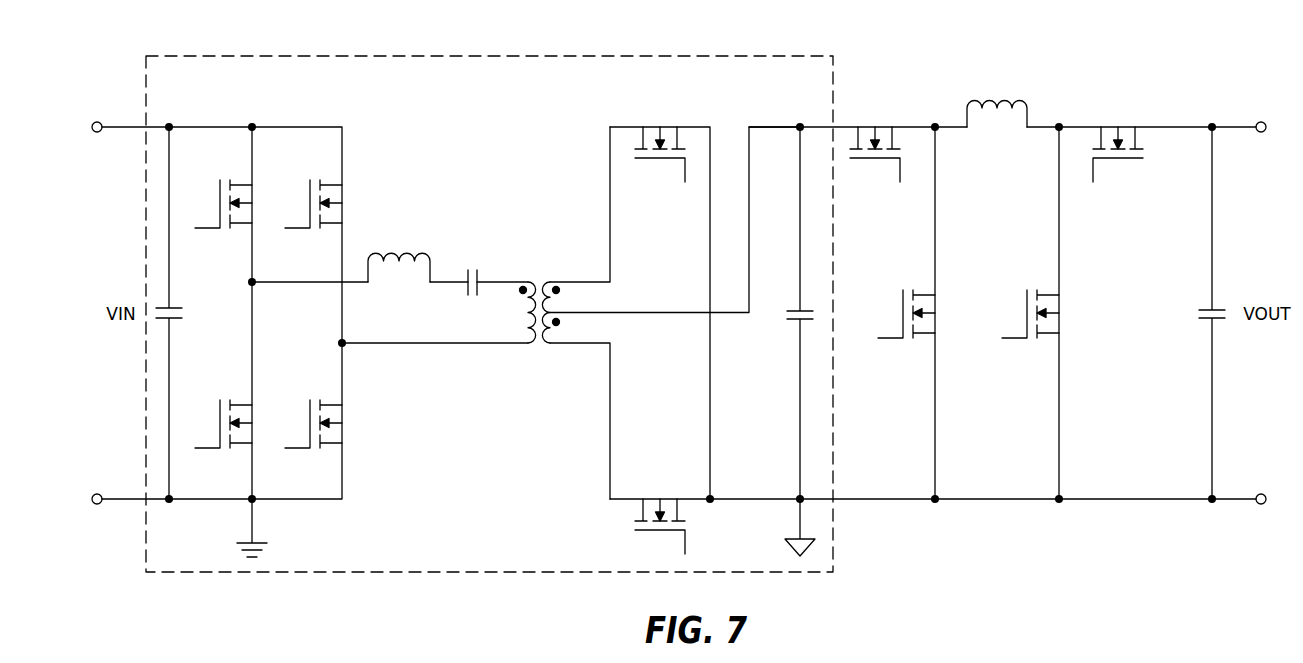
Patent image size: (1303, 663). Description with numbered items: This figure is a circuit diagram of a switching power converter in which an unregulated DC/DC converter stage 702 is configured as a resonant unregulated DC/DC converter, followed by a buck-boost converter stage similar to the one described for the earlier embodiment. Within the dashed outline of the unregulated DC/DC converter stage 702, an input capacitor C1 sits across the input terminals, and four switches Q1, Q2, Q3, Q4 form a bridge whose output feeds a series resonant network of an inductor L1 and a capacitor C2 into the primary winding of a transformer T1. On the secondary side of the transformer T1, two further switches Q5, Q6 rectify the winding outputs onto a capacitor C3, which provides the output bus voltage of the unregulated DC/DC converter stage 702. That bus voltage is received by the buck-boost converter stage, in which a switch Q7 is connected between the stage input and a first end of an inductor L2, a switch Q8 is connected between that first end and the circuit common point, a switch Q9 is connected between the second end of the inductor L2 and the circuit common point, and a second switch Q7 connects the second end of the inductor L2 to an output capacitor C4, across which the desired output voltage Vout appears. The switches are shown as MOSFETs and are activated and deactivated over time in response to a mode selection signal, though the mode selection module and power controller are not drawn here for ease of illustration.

The unregulated DC/DC converter stage 702 is at (761, 43).
The transistor Q1 is at (221, 204).
The transistor Q2 is at (221, 424).
The transistor Q3 is at (311, 204).
The transistor Q4 is at (311, 424).
The transistor Q5 is at (660, 528).
The transistor Q6 is at (660, 156).
The switch Q7 is at (996, 156).
The switch Q8 is at (904, 314).
The switch Q9 is at (1028, 314).
The input capacitor C1 is at (182, 313).
The resonant capacitor C2 is at (475, 270).
The capacitor C3 is at (787, 313).
The output capacitor C4 is at (1198, 313).
The inductor L1 is at (399, 255).
The output inductor L2 is at (997, 100).
The transformer T1 is at (540, 298).